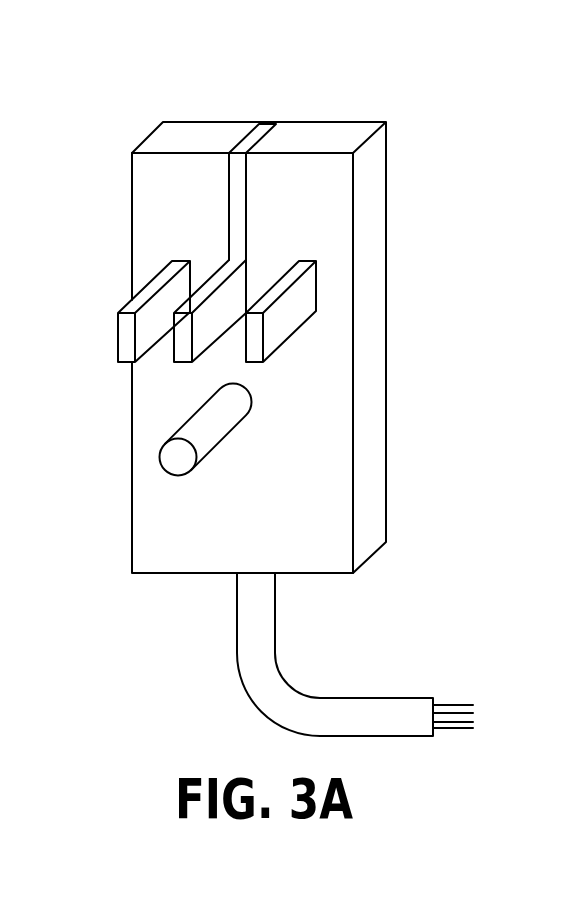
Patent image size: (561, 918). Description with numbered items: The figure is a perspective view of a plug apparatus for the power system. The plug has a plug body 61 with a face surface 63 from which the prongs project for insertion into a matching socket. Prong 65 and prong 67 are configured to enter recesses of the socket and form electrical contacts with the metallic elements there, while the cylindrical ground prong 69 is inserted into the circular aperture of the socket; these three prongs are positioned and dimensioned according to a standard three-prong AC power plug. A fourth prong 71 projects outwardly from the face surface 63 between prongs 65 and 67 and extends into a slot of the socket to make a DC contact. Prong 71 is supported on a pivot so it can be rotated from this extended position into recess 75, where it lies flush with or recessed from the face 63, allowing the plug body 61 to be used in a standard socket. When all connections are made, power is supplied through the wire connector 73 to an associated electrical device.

The plug body 61 is at (328, 183).
The face surface 63 is at (338, 375).
The prong 65 is at (300, 302).
The prong 67 is at (125, 344).
The cylindrical ground prong 69 is at (220, 423).
The fourth prong 71 is at (222, 274).
The wire connector 73 is at (269, 672).
The recess 75 is at (250, 150).